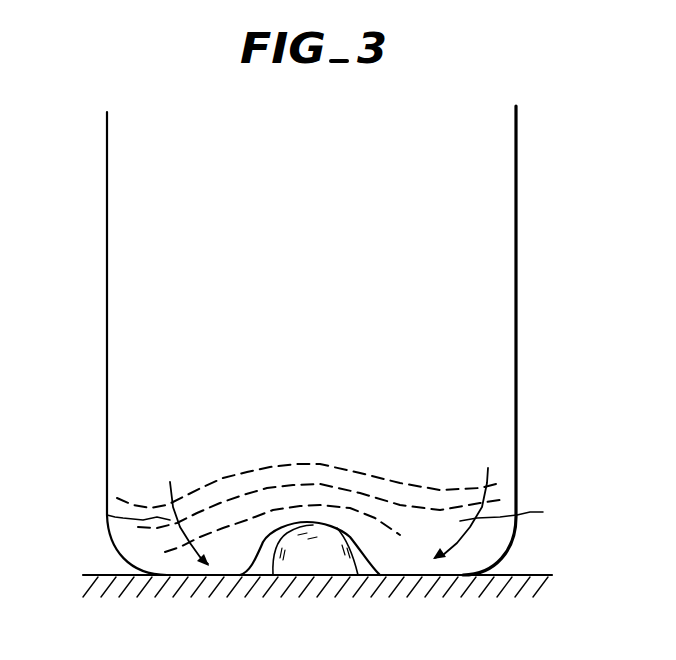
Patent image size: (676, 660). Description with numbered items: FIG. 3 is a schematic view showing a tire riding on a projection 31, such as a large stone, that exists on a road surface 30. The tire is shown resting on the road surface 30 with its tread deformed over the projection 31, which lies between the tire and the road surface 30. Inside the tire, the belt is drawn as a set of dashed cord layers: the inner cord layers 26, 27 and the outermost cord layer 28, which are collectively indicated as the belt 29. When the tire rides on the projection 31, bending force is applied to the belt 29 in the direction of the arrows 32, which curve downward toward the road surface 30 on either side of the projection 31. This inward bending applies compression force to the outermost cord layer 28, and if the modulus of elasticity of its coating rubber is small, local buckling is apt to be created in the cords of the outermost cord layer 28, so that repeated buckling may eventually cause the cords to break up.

The first flow stream line 26 is at (346, 461).
The second flow stream line 27 is at (357, 454).
The outermost cord layer 28 is at (580, 440).
The flow stream lines 29 is at (374, 444).
The road surface 30 is at (338, 565).
The projection 31 is at (325, 555).
The arrow 32 is at (312, 517).